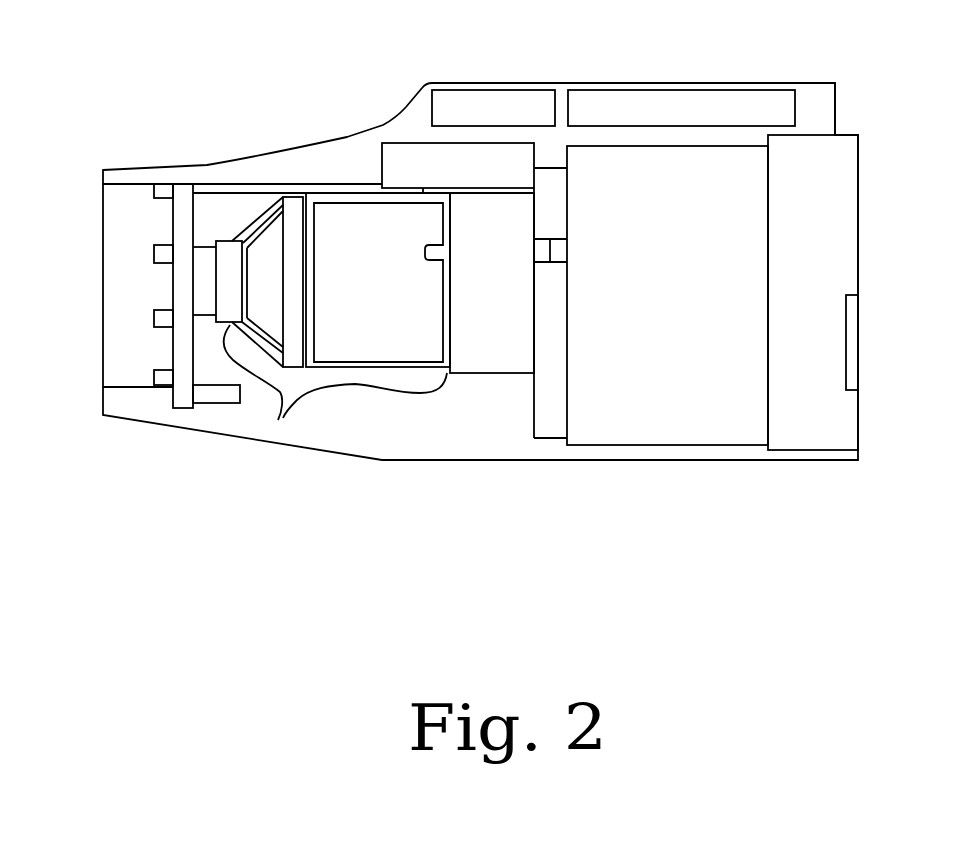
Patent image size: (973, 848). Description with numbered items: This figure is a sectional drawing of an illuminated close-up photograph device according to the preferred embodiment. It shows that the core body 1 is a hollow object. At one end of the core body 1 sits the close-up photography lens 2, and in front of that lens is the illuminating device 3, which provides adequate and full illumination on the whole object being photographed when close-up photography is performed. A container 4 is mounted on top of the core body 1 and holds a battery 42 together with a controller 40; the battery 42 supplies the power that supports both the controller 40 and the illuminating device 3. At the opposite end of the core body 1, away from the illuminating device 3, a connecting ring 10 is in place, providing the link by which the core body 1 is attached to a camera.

The core body 1 is at (662, 465).
The close-up photography lens 2 is at (283, 400).
The illuminating device 3 is at (163, 375).
The container 4 is at (730, 83).
The controller 40 is at (503, 97).
The battery 42 is at (777, 108).
The connecting ring 10 is at (848, 347).